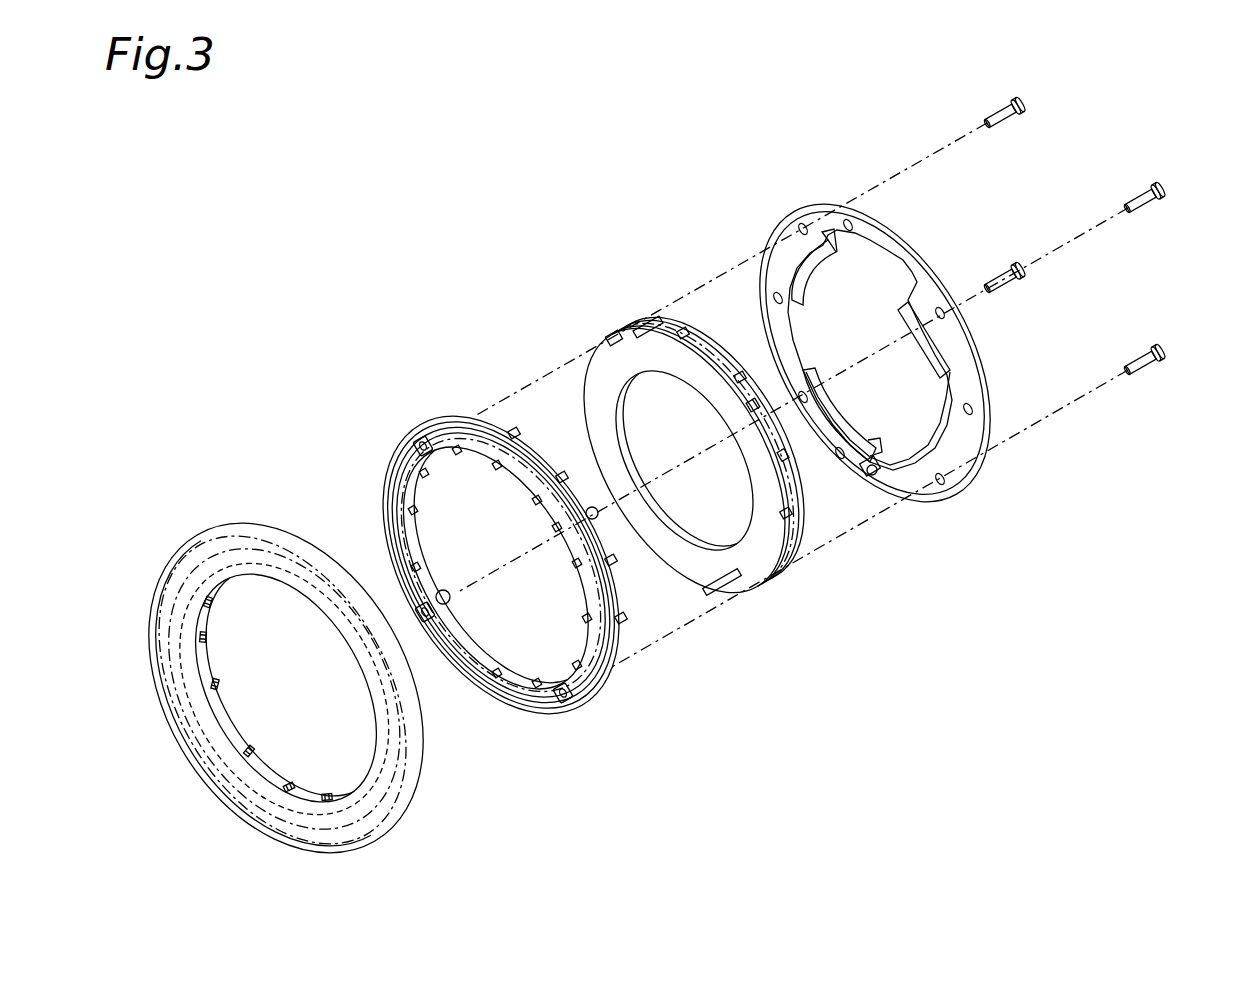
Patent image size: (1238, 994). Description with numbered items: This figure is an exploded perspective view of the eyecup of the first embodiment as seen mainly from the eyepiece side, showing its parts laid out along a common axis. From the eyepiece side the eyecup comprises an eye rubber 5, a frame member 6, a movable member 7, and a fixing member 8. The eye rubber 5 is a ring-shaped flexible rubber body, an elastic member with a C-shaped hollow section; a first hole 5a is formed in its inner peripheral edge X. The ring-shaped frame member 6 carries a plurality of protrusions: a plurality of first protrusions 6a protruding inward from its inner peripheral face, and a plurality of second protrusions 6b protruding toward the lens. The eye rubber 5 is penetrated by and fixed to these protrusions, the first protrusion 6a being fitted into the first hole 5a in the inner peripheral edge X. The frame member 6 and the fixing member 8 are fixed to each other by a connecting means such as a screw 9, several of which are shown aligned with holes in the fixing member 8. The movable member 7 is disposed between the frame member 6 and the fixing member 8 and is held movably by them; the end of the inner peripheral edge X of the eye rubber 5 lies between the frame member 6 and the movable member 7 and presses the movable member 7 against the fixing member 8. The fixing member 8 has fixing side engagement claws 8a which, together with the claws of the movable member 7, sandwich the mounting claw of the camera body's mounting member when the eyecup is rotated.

The eye rubber 5 is at (357, 842).
The first hole 5a is at (207, 637).
The inner peripheral edge X is at (230, 713).
The frame member 6 is at (549, 715).
The first protrusion 6a is at (418, 566).
The second protrusion 6b is at (518, 433).
The movable member 7 is at (756, 592).
The fixing member 8 is at (953, 498).
The fixing side engagement claw 8a is at (810, 273).
The screw 9 is at (1021, 104).